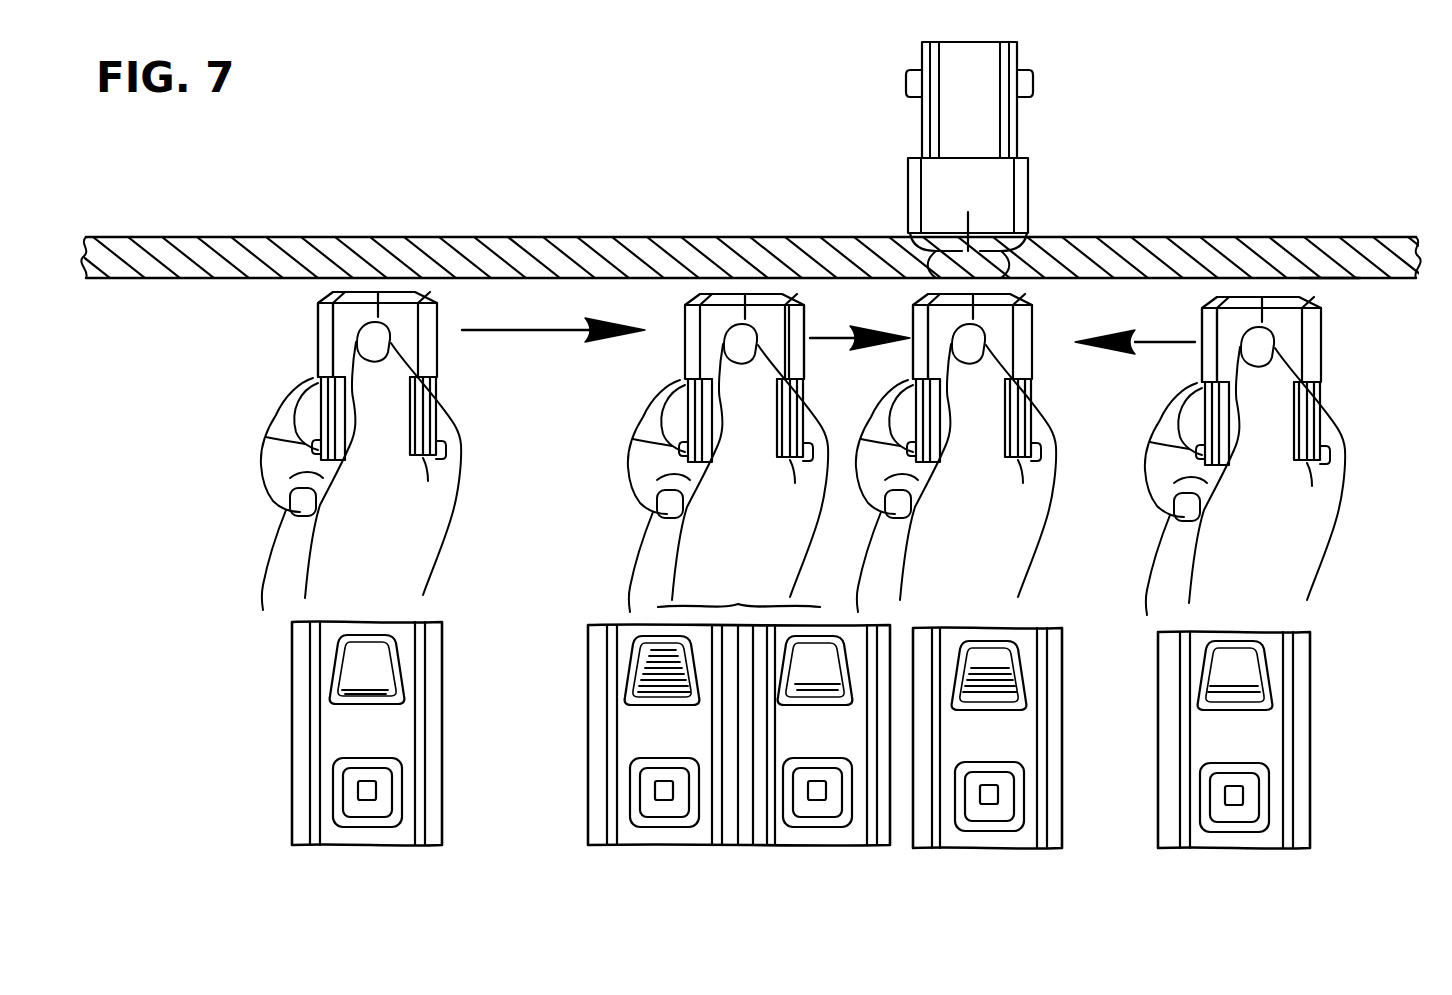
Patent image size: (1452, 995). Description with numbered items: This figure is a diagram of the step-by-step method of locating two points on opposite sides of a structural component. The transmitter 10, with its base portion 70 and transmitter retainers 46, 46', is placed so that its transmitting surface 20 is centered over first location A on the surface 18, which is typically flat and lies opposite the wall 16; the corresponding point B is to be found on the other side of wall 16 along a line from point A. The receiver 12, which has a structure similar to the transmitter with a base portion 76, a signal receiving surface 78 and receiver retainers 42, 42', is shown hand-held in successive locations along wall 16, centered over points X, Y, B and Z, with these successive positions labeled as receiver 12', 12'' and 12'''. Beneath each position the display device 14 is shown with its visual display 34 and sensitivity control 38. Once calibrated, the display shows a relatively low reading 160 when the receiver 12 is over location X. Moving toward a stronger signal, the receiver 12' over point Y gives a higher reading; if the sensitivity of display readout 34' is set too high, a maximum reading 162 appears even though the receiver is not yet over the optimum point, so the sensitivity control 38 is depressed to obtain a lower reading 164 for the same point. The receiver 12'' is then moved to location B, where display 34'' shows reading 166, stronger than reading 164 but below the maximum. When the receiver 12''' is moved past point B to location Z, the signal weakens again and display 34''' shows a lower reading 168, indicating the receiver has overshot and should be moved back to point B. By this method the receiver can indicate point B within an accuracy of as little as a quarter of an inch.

The transmitter 10 is at (978, 154).
The receiver 12 is at (341, 451).
The receiver 12' is at (715, 453).
The receiver 12'' is at (950, 453).
The receiver 12''' is at (1245, 456).
The display device 14 is at (292, 733).
The wall 16 is at (1345, 281).
The surface 18 is at (1330, 255).
The transmitting surface 20 is at (1040, 250).
The visual display 34 is at (410, 667).
The display readout 34' is at (693, 635).
The display 34'' is at (1037, 675).
The display 34''' is at (1299, 675).
The sensitivity control 38 is at (360, 792).
The receiver retainer 42 is at (698, 459).
The receiver retainer 42' is at (921, 425).
The transmitter retainer 46 is at (875, 87).
The transmitter retainer 46' is at (1062, 63).
The base portion 70 is at (1030, 180).
The base portion 76 is at (318, 328).
The signal receiving surface 78 is at (413, 290).
The display reading 160 is at (390, 698).
The display readout 162 is at (640, 680).
The display readout 164 is at (838, 696).
The display readout 166 is at (995, 700).
The display readout 168 is at (1255, 704).